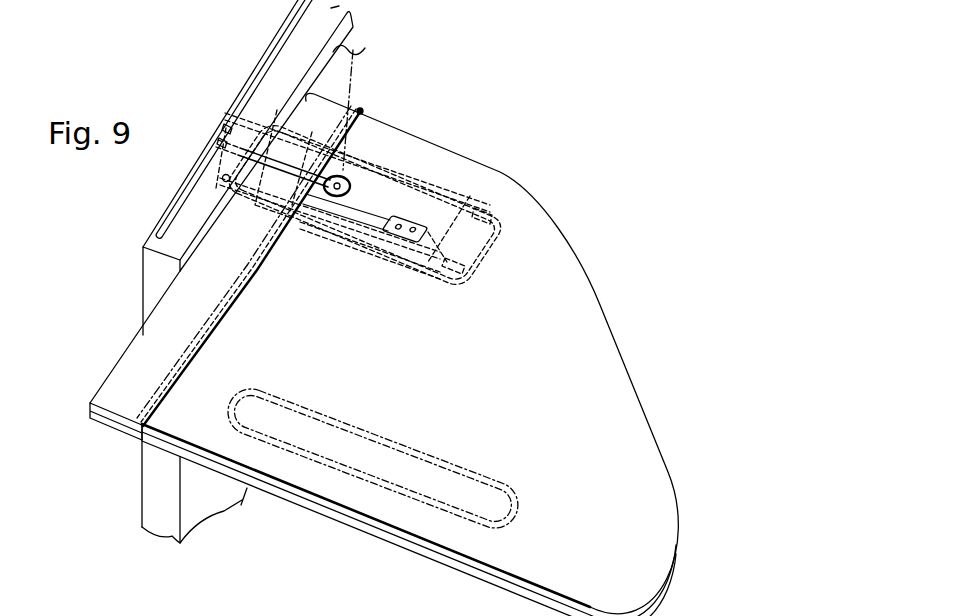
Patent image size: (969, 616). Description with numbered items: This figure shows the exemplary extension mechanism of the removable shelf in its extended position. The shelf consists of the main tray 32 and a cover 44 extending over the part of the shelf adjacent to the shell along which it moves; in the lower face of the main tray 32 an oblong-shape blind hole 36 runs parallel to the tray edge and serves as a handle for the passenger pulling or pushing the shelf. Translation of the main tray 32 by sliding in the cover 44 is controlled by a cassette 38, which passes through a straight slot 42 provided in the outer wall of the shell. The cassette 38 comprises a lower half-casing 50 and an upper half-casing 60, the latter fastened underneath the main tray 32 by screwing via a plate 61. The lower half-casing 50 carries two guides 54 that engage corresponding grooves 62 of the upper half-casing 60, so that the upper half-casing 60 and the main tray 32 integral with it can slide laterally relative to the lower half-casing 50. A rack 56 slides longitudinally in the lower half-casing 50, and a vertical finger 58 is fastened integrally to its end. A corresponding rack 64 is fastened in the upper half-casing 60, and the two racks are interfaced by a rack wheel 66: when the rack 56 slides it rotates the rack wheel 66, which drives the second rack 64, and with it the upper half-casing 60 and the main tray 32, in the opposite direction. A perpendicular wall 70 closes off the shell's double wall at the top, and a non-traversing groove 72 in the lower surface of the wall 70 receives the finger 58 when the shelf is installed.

The main tray 32 is at (395, 374).
The oblong-shape blind hole 36 is at (497, 512).
The cassette 38 is at (283, 612).
The straight slot 42 is at (365, 50).
The cover 44 is at (184, 344).
The lower half-casing 50 is at (291, 139).
The guides 54 is at (223, 176).
The rack 56 is at (221, 140).
The vertical finger 58 is at (224, 126).
The upper half-casing 60 is at (452, 288).
The plate 61 is at (399, 232).
The grooves 62 is at (478, 212).
The rack 64 is at (380, 180).
The rack wheel 66 is at (348, 178).
The perpendicular wall 70 is at (150, 245).
The non-traversing groove 72 is at (268, 66).